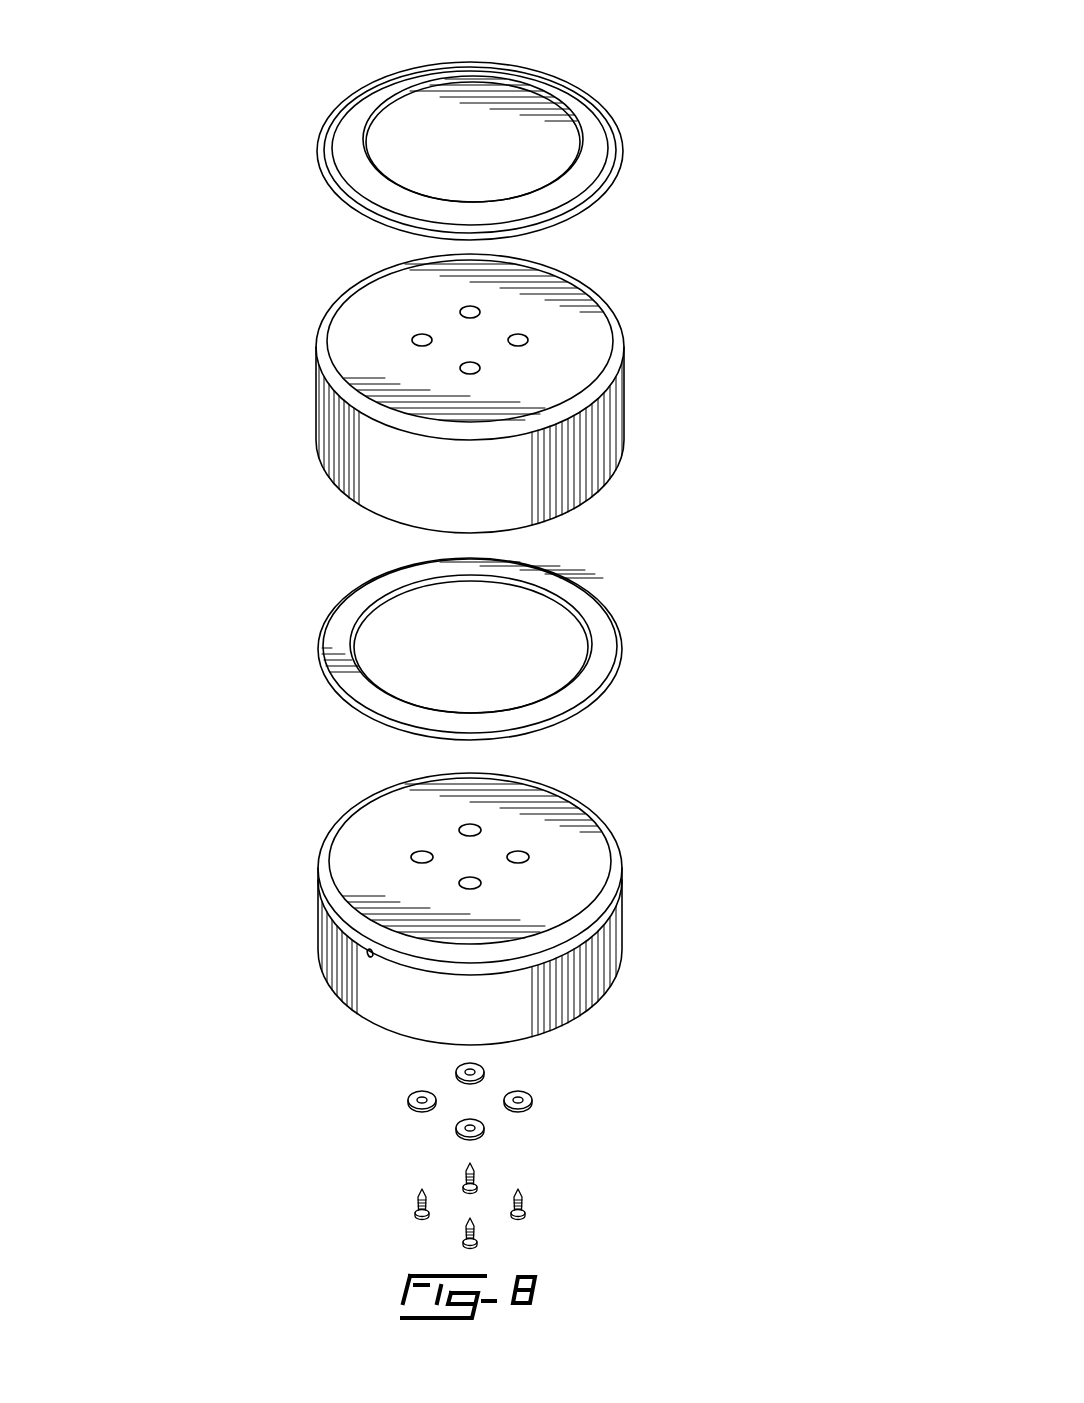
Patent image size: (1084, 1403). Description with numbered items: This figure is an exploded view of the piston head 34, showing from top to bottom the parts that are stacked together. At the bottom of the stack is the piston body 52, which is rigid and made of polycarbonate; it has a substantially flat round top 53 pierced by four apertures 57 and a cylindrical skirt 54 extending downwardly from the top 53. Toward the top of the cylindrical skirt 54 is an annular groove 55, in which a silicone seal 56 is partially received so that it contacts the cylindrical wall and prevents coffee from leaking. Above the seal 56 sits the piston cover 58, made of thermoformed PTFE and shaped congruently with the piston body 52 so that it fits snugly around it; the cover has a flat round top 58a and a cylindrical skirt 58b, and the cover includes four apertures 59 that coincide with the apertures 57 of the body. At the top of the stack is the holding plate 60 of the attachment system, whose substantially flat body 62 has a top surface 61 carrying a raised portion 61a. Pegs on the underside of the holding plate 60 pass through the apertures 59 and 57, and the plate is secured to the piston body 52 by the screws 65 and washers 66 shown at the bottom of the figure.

The piston head 34 is at (215, 512).
The holding plate 60 is at (625, 93).
The top surface 61 is at (544, 82).
The raised portion 61a is at (493, 147).
The flat body 62 is at (407, 112).
The piston cover 58 is at (640, 300).
The flat round top 58a is at (370, 308).
The cylindrical skirt 58b is at (608, 430).
The apertures 59 is at (468, 302).
The silicone seal 56 is at (635, 597).
The piston body 52 is at (642, 890).
The flat round top 53 is at (515, 825).
The apertures 57 is at (418, 848).
The annular groove 55 is at (367, 917).
The cylindrical skirt 54 is at (590, 970).
The washers 66 is at (535, 1078).
The screws 65 is at (548, 1198).